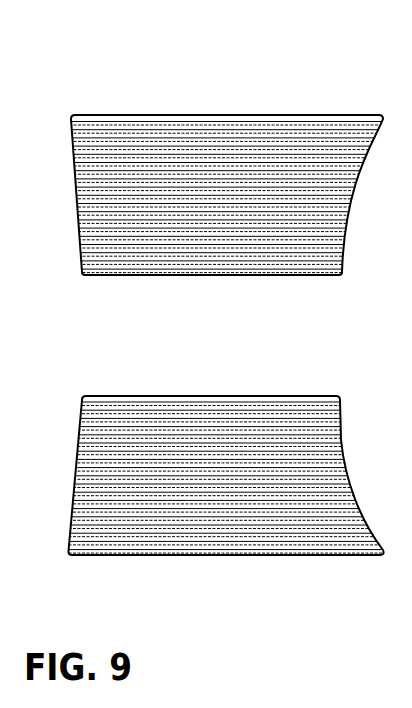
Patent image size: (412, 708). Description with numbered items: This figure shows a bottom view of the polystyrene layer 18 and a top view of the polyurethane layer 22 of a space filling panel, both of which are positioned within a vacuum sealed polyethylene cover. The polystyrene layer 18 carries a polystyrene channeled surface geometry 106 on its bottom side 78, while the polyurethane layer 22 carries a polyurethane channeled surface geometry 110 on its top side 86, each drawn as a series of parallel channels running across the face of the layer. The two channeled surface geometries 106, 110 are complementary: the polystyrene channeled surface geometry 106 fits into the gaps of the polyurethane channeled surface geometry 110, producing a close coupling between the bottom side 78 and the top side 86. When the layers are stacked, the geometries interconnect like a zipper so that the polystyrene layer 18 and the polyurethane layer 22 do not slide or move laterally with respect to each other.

The polystyrene layer 18 is at (67, 106).
The bottom side of the polystyrene layer 78 is at (145, 143).
The polystyrene channeled surface geometry 106 is at (263, 138).
The polyurethane layer 22 is at (76, 395).
The top side of the polyurethane layer 86 is at (118, 417).
The polyurethane channeled surface geometry 110 is at (229, 418).